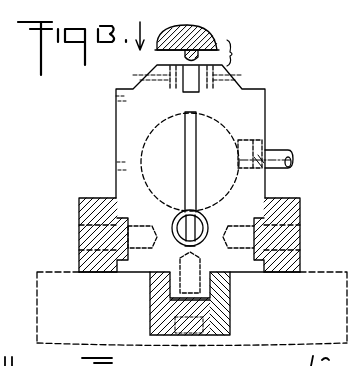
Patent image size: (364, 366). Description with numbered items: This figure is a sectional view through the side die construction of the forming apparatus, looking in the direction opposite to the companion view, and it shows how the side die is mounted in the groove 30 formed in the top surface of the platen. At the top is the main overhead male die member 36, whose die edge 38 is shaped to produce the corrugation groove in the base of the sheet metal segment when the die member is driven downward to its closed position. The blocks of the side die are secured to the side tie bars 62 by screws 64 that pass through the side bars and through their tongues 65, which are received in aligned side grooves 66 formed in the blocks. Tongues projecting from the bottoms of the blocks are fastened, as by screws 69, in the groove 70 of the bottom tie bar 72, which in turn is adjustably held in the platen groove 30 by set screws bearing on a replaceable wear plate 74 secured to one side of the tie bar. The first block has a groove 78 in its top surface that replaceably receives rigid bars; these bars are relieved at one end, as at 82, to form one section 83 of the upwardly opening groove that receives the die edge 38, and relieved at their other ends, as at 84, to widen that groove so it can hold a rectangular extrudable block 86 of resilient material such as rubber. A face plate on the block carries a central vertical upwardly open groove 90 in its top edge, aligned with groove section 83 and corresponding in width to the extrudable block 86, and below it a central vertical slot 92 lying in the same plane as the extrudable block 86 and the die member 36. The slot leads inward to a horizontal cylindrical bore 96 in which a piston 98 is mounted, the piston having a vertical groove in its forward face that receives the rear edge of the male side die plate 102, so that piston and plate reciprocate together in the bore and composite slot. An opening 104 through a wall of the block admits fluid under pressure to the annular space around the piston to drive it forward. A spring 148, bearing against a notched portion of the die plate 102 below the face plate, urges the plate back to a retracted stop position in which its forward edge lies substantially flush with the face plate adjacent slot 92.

The groove 30 is at (151, 322).
The main overhead male die member 36 is at (186, 25).
The die edge 38 is at (176, 53).
The side tie bar 62 is at (79, 200).
The screw 64 is at (77, 233).
The tongue 65 is at (252, 255).
The side groove 66 is at (130, 225).
The screw 69 is at (193, 338).
The groove 70 is at (228, 293).
The bottom tie bar 72 is at (155, 288).
The wear plate 74 is at (230, 308).
The groove 78 is at (247, 87).
The relieved portion 82 is at (228, 80).
The groove section 83 is at (239, 53).
The relieved portion 84 is at (204, 88).
The extrudable block 86 is at (182, 85).
The groove 90 is at (183, 92).
The slot 92 is at (183, 173).
The cylindrical bore 96 is at (234, 174).
The piston 98 is at (214, 133).
The male side die plate 102 is at (190, 160).
The opening 104 is at (252, 157).
The spring 148 is at (178, 242).